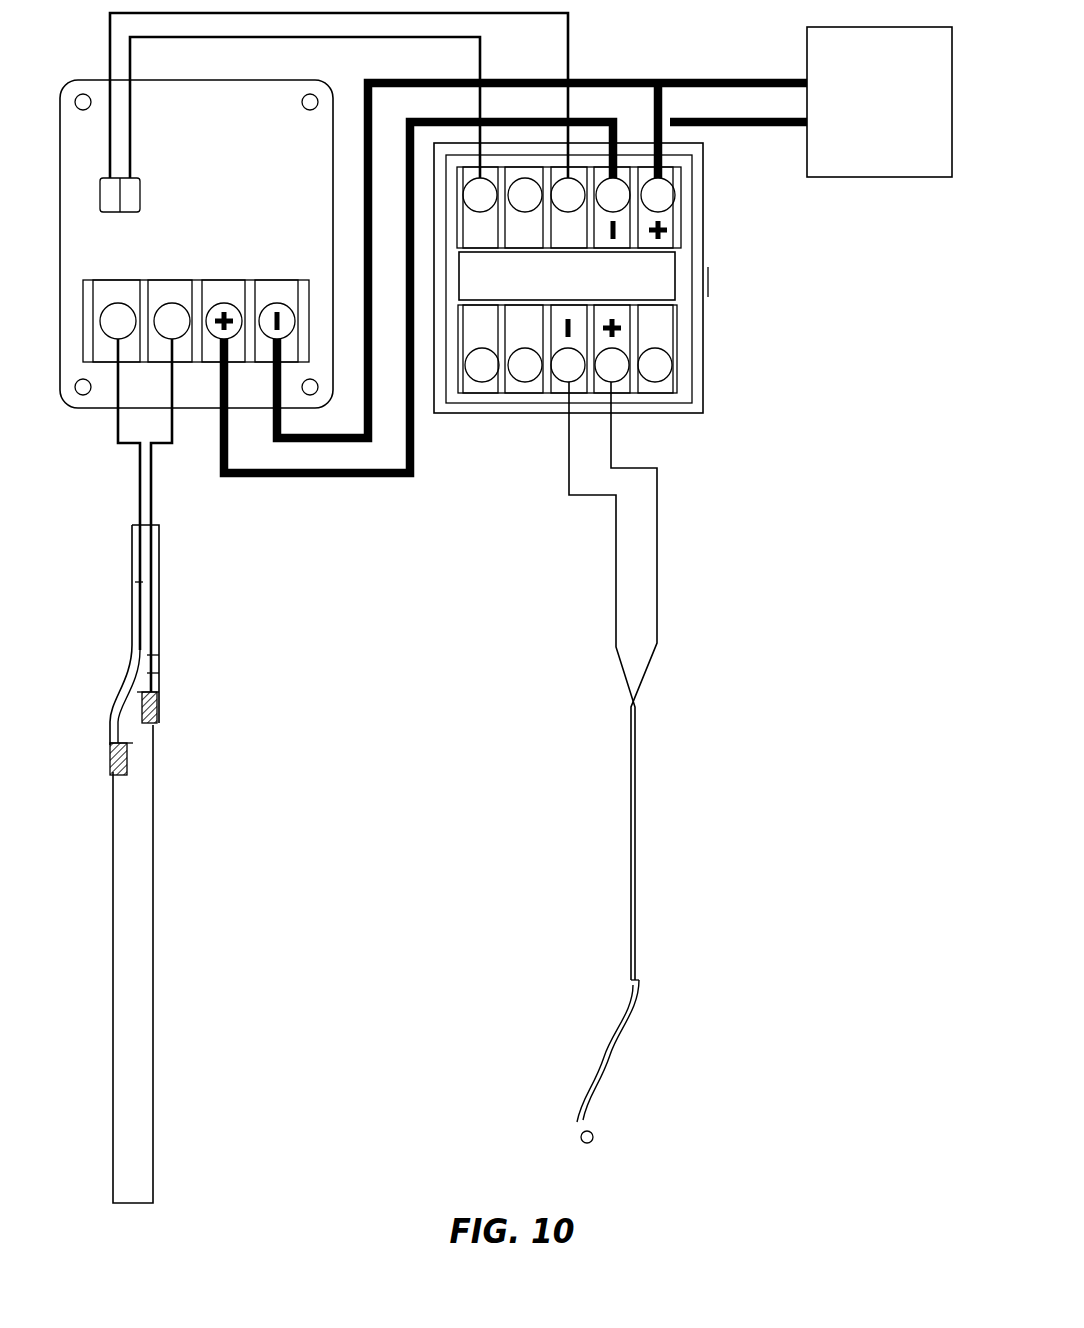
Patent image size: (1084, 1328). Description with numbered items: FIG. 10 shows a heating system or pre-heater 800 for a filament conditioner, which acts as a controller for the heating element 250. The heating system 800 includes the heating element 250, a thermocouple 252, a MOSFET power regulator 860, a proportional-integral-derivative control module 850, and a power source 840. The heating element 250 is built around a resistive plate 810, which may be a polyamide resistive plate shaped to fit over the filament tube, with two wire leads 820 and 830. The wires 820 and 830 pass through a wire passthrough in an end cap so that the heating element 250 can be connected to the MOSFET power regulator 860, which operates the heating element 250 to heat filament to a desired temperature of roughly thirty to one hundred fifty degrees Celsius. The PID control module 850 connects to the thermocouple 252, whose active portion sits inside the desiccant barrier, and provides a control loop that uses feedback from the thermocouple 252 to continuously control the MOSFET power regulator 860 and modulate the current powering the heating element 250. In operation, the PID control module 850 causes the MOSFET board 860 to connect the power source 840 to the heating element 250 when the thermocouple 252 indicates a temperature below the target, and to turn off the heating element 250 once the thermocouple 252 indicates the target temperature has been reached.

The heating system 800 is at (866, 582).
The resistive plate 810 is at (155, 903).
The wire lead 820 is at (155, 605).
The wire lead 830 is at (138, 582).
The power source 840 is at (879, 102).
The PID control module 850 is at (571, 278).
The MOSFET power regulator 860 is at (196, 244).
The heating element 250 is at (173, 964).
The thermocouple 252 is at (640, 863).